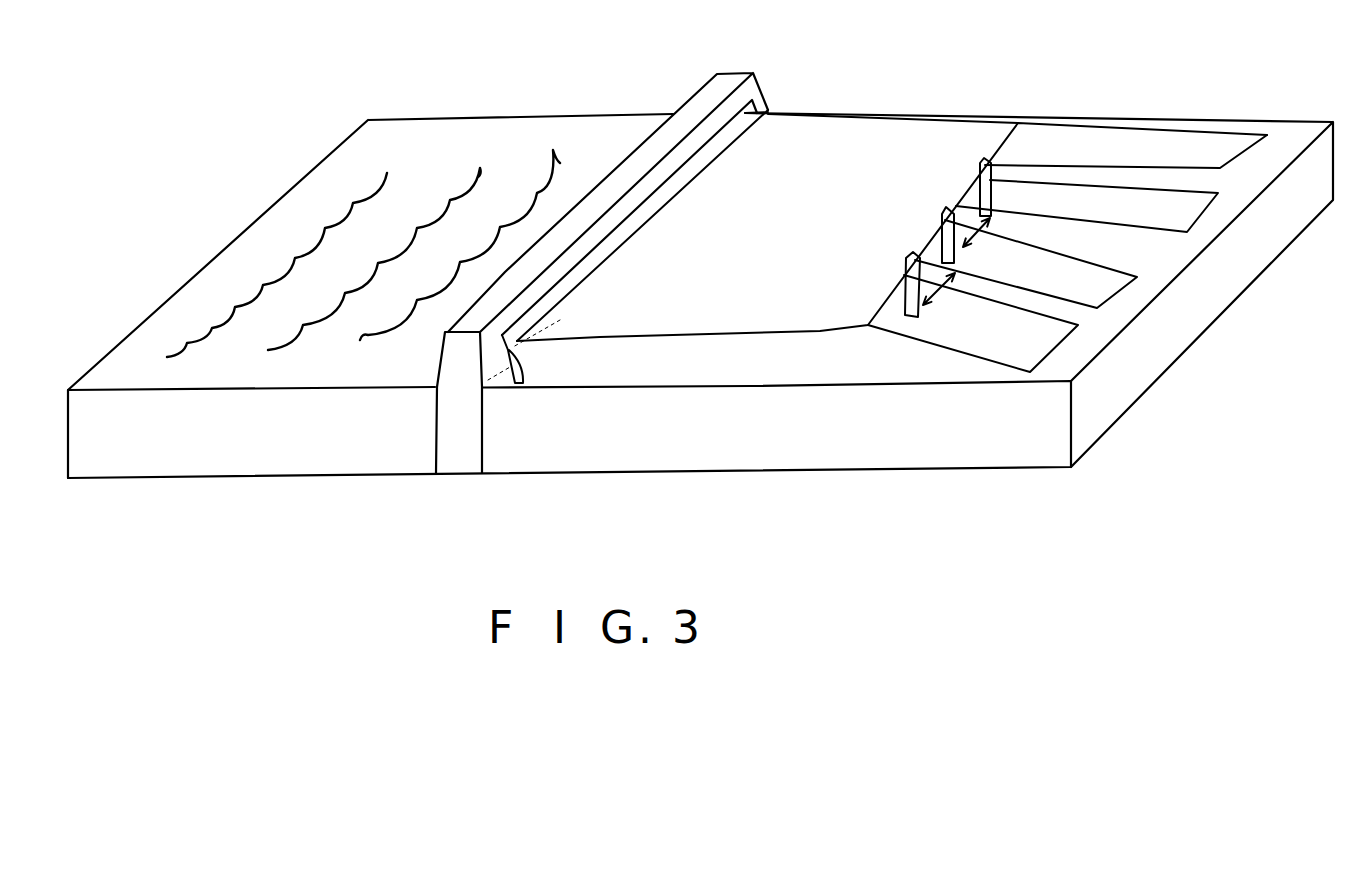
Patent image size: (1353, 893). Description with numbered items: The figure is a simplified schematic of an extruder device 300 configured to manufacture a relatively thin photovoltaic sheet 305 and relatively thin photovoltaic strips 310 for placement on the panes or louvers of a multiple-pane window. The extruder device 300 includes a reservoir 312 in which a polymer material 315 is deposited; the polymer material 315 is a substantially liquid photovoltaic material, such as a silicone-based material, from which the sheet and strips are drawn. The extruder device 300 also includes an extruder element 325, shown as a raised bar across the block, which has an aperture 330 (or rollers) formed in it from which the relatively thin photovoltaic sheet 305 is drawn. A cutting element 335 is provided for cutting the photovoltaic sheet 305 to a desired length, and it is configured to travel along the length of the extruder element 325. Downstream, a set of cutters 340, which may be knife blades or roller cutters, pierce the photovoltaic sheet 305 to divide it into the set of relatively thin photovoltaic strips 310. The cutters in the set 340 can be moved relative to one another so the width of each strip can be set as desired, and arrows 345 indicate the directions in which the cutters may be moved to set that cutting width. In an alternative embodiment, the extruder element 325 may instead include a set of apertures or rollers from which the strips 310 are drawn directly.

The extruder device 300 is at (1007, 490).
The relatively thin photovoltaic sheet 305 is at (827, 132).
The relatively thin photovoltaic strips 310 is at (1243, 167).
The reservoir 312 is at (195, 455).
The polymer material 315 is at (272, 376).
The extruder element 325 is at (728, 63).
The aperture 330 is at (760, 94).
The cutting element 335 is at (530, 369).
The set of cutters 340 is at (948, 220).
The arrows 345 is at (978, 238).